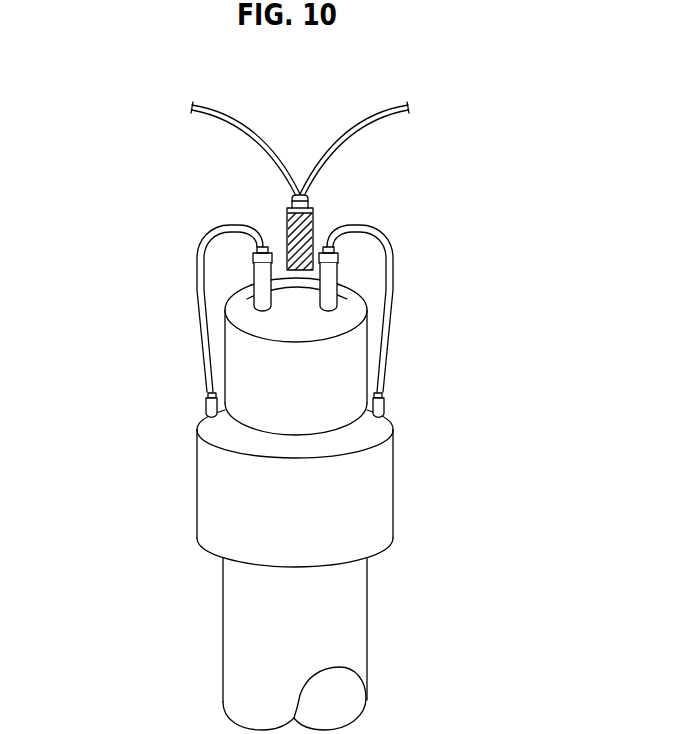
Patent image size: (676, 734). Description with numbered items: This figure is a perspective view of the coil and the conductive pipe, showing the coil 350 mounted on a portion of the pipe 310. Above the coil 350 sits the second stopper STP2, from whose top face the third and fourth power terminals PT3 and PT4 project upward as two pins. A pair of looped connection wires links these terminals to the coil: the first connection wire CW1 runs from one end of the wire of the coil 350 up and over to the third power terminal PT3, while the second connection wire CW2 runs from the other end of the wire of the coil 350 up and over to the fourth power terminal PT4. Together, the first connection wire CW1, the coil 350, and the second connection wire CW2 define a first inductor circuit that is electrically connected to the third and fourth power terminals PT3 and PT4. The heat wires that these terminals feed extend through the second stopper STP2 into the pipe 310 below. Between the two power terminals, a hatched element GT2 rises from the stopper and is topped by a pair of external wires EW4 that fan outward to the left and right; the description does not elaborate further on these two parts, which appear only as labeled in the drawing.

The electric wire EW4 is at (254, 122).
The glass tube / connector GT2 is at (313, 220).
The third power terminal PT3 is at (254, 280).
The fourth power terminal PT4 is at (338, 268).
The first connection wire CW1 is at (203, 345).
The second connection wire CW2 is at (391, 334).
The second stopper STP2 is at (283, 328).
The coil 350 is at (394, 485).
The pipe 310 is at (223, 612).